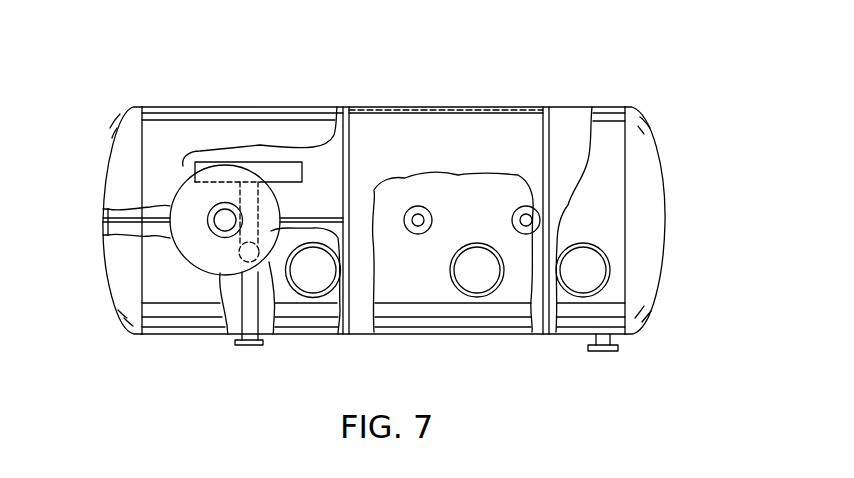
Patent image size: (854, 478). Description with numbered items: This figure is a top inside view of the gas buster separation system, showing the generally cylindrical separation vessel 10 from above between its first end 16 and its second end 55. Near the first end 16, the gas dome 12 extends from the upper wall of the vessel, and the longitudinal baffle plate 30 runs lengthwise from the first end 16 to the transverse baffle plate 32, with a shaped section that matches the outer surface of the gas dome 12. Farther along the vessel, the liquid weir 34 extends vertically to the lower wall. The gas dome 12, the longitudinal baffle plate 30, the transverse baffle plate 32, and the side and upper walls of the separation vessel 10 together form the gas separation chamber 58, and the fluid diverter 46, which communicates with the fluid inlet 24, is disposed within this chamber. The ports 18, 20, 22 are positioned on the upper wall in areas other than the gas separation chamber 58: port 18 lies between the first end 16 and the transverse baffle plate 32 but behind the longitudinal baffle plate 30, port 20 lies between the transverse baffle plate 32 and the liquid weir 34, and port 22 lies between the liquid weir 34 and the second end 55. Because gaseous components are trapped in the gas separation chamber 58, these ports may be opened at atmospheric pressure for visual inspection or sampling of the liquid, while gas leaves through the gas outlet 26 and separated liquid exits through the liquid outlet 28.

The separation vessel 10 is at (114, 44).
The gas dome 12 is at (178, 255).
The first end 16 is at (101, 245).
The port 18 is at (312, 297).
The port 20 is at (492, 291).
The port 22 is at (609, 271).
The fluid inlet 24 is at (250, 347).
The gas outlet 26 is at (212, 231).
The liquid outlet 28 is at (603, 352).
The longitudinal baffle plate 30 is at (125, 216).
The transverse baffle plate 32 is at (355, 130).
The liquid weir 34 is at (553, 130).
The fluid diverter 46 is at (277, 172).
The second end 55 is at (663, 180).
The gas separation chamber 58 is at (227, 155).